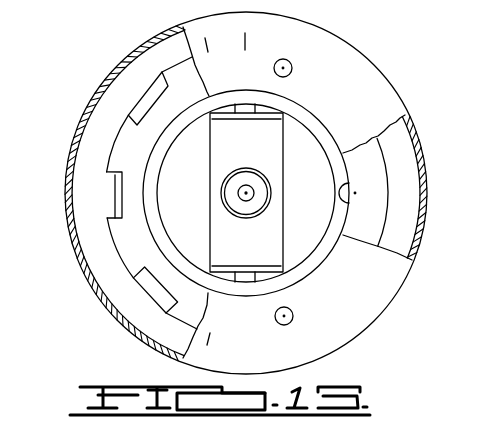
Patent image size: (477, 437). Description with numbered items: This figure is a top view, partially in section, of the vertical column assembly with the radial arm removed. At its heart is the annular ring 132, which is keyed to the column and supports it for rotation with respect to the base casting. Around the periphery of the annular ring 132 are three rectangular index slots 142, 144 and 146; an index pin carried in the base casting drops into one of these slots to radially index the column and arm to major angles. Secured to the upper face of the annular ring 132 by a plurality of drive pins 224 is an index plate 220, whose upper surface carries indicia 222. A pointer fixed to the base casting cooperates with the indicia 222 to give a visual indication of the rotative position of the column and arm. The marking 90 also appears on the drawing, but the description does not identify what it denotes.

The index plate 220 is at (386, 64).
The indicia 222 is at (262, 332).
The drive pins 224 is at (292, 71).
The mark 90 is at (247, 351).
The annular ring 132 is at (118, 270).
The rectangular index slot 142 is at (163, 311).
The rectangular index slot 144 is at (107, 218).
The rectangular index slot 146 is at (131, 118).